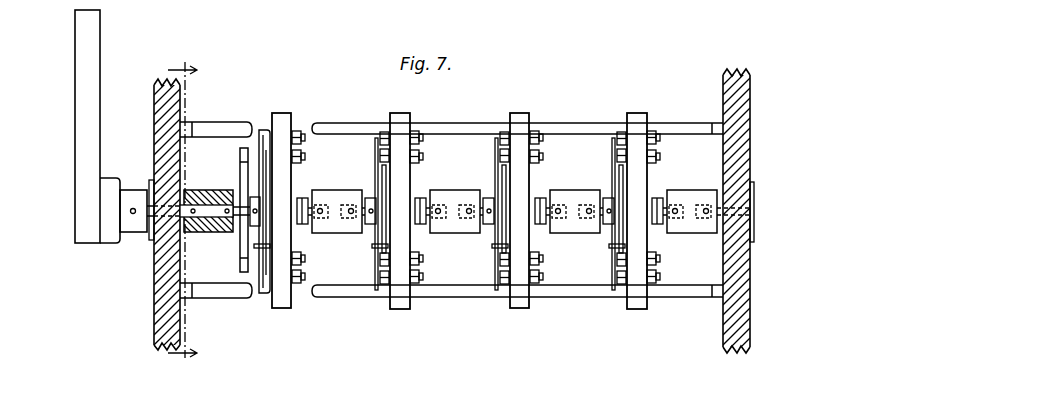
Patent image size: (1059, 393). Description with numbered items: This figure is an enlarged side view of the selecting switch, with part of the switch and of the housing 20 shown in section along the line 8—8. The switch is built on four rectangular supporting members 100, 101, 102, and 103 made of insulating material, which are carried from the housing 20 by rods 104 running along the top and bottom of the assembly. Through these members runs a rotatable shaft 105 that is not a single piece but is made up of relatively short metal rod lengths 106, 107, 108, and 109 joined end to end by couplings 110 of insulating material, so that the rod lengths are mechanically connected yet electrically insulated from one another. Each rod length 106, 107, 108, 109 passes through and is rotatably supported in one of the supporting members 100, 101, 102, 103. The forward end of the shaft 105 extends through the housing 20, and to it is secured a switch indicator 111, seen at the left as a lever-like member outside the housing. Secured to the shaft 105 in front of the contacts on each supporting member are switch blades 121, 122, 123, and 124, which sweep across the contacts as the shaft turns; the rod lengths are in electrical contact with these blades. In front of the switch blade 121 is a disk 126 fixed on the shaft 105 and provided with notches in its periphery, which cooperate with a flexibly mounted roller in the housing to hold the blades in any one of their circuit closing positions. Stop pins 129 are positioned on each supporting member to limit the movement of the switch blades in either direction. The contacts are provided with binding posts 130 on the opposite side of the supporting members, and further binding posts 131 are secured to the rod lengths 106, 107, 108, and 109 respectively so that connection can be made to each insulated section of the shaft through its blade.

The section line 8- 8 is at (182, 212).
The housing 20 is at (155, 305).
The supporting member 100 is at (282, 113).
The supporting member 101 is at (399, 113).
The supporting member 102 is at (520, 113).
The supporting member 103 is at (638, 113).
The rods 104 is at (571, 127).
The rotatable shaft 105 is at (150, 186).
The rod length 106 is at (218, 190).
The rod length 107 is at (361, 192).
The rod length 108 is at (482, 205).
The rod length 109 is at (600, 207).
The couplings 110 is at (212, 233).
The switch indicator 111 is at (75, 80).
The switch blade 121 is at (268, 138).
The switch blade 122 is at (376, 148).
The switch blade 123 is at (497, 150).
The switch blade 124 is at (613, 155).
The disk 126 is at (244, 273).
The stop pins 129 is at (375, 252).
The binding posts 130 is at (304, 158).
The binding posts 131 is at (297, 199).